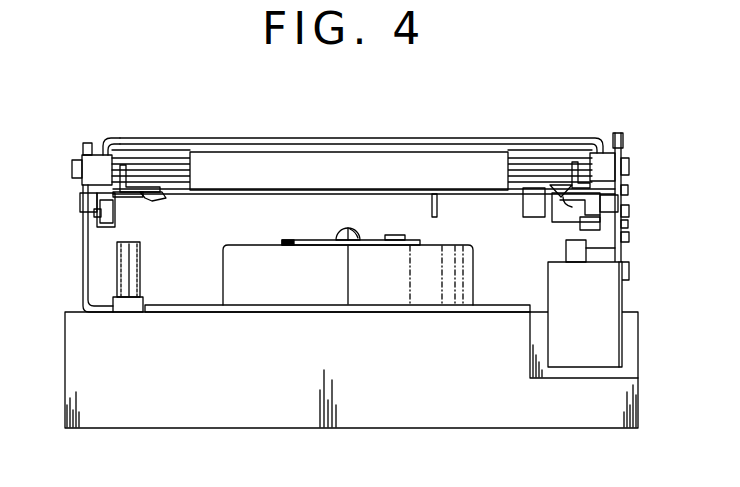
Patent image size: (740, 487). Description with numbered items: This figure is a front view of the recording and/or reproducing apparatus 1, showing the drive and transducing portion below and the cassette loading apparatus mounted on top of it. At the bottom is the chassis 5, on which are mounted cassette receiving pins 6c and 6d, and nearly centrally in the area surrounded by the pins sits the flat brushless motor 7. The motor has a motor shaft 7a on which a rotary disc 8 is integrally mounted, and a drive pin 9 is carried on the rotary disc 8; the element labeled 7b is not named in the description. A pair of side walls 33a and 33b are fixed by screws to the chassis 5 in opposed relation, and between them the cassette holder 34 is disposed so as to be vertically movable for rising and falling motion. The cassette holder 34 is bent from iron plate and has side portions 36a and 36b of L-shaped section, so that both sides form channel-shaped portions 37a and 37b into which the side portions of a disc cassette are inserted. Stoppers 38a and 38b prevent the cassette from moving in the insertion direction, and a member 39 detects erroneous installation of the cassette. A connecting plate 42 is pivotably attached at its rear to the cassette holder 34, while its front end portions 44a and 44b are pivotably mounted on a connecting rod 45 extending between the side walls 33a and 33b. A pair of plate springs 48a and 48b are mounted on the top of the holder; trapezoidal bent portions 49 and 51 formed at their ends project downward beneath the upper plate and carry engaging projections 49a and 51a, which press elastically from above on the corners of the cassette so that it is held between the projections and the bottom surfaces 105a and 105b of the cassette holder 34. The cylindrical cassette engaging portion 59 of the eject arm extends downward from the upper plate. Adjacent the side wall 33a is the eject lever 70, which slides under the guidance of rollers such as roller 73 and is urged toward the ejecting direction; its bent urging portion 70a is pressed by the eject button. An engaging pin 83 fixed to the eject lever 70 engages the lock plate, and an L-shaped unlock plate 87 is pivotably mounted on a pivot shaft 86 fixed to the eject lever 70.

The recording and/or reproducing apparatus 1 is at (606, 128).
The chassis 5 is at (82, 320).
The cassette receiving pin 6c is at (132, 265).
The cassette receiving pin 6d is at (577, 252).
The flat brushless motor 7 is at (232, 280).
The motor shaft 7a is at (343, 237).
The dome 7b is at (352, 229).
The rotary disc 8 is at (297, 242).
The drive pin 9 is at (393, 235).
The side wall 33a is at (613, 143).
The side wall 33b is at (85, 262).
The cassette holder 34 is at (231, 195).
The side portion 36a is at (630, 210).
The side portion 36b is at (80, 198).
The channel-shaped portion 37a is at (627, 190).
The channel-shaped portion 37b is at (110, 205).
The stopper 38a is at (555, 207).
The stopper 38b is at (100, 225).
The erroneous installation detecting member 39 is at (433, 210).
The connecting plate 42 is at (147, 140).
The front end portion 44a is at (603, 145).
The front end portion 44b is at (97, 148).
The connecting rod 45 is at (72, 167).
The plate spring 48a is at (537, 168).
The plate spring 48b is at (173, 170).
The trapezoidal bent portion 49 is at (565, 187).
The engaging projection 49a is at (575, 210).
The trapezoidal bent portion 51 is at (145, 194).
The engaging projection 51a is at (127, 203).
The cassette engaging portion 59 is at (525, 200).
The eject lever 70 is at (624, 147).
The urging portion 70a is at (613, 320).
The roller 73 is at (632, 272).
The engaging pin 83 is at (630, 242).
The pivot shaft 86 is at (632, 224).
The unlock plate 87 is at (622, 190).
The bottom surface 105a is at (580, 235).
The bottom surface 105b is at (100, 213).